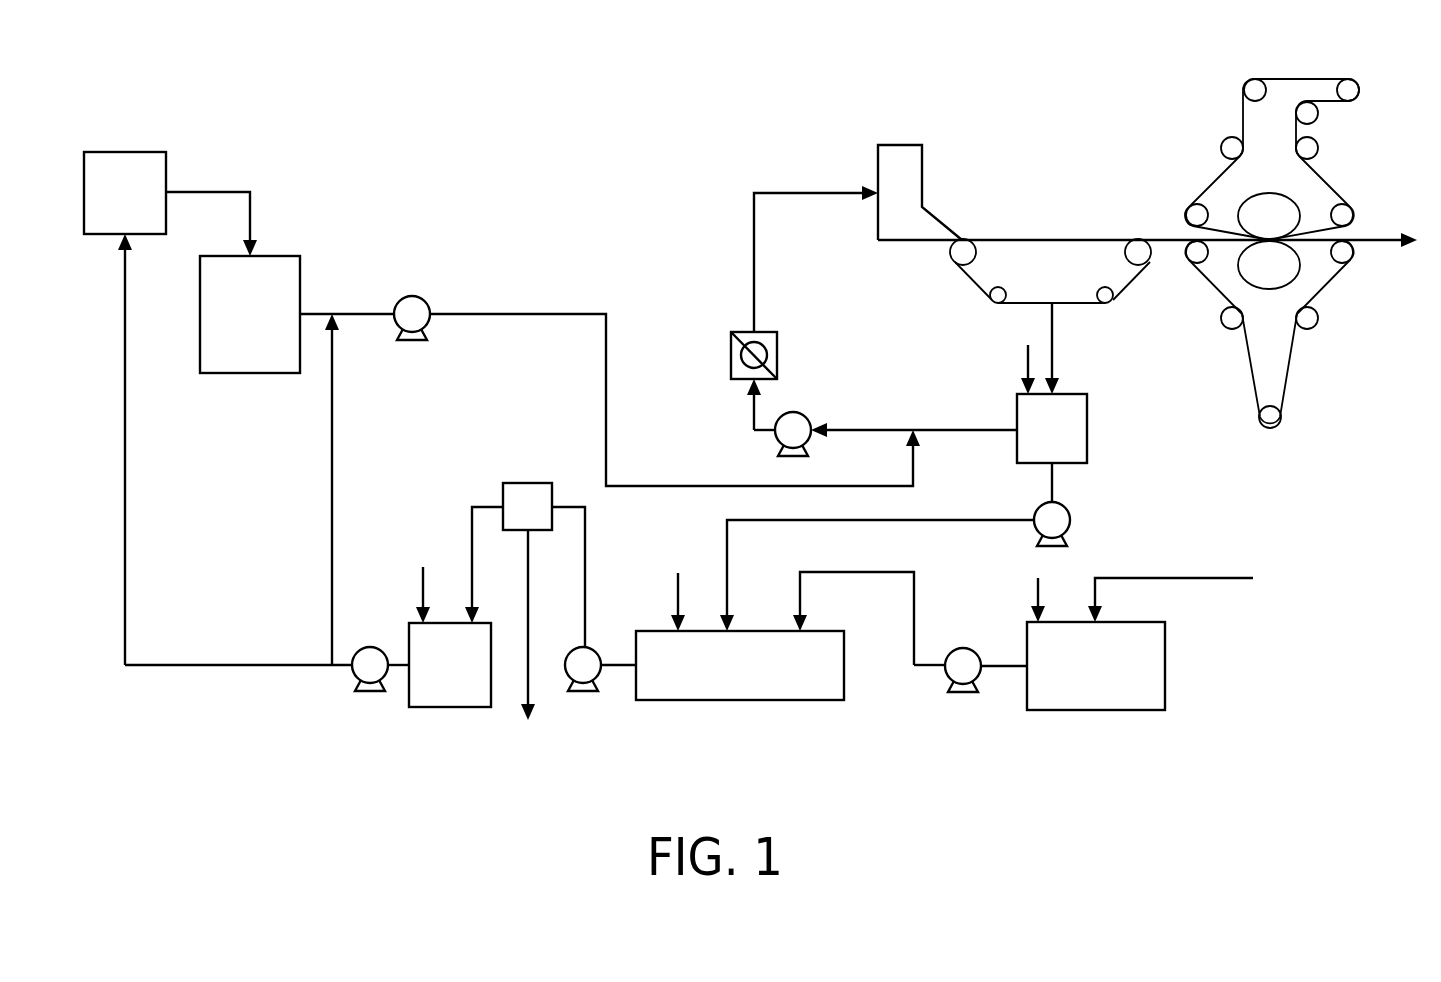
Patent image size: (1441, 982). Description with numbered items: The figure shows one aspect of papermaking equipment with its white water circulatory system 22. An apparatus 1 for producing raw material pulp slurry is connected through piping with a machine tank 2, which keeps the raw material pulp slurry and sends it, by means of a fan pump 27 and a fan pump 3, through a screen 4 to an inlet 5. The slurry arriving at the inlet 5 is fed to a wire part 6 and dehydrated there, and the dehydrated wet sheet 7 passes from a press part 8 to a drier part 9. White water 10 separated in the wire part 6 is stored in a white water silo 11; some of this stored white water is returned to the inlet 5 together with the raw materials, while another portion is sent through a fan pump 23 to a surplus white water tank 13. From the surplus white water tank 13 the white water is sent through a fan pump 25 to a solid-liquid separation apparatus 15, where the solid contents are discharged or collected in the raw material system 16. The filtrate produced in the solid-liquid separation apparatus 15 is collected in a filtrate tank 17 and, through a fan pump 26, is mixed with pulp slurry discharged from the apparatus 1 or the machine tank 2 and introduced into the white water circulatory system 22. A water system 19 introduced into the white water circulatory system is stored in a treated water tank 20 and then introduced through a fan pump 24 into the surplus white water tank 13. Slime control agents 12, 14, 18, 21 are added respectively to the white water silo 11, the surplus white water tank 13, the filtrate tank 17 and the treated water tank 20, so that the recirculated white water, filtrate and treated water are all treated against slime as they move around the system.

The apparatus for producing raw material pulp slurry 1 is at (125, 193).
The machine tank 2 is at (250, 314).
The fan pump 3 is at (794, 426).
The screen 4 is at (731, 356).
The inlet 5 is at (900, 168).
The wire part 6 is at (1058, 256).
The wet sheet 7 is at (1168, 238).
The press part 8 is at (1282, 132).
The drier part 9 is at (1419, 240).
The white water 10 is at (1055, 352).
The white water silo 11 is at (1072, 433).
The slime control agent 12 is at (1028, 353).
The surplus white water tank 13 is at (741, 682).
The slime control agent 14 is at (678, 585).
The solid-liquid separation apparatus 15 is at (527, 506).
The solid content discharge or collection in raw material system 16 is at (527, 645).
The filtrate tank 17 is at (450, 665).
The slime control agent 18 is at (423, 578).
The water system introduced into white water circulatory system 19 is at (1186, 591).
The treated water tank 20 is at (1096, 666).
The slime control agent 21 is at (1038, 582).
The white water circulatory system 22 is at (541, 131).
The fan pump 23 is at (1066, 520).
The fan pump 24 is at (968, 694).
The fan pump 25 is at (587, 693).
The fan pump 26 is at (372, 693).
The fan pump 27 is at (412, 306).